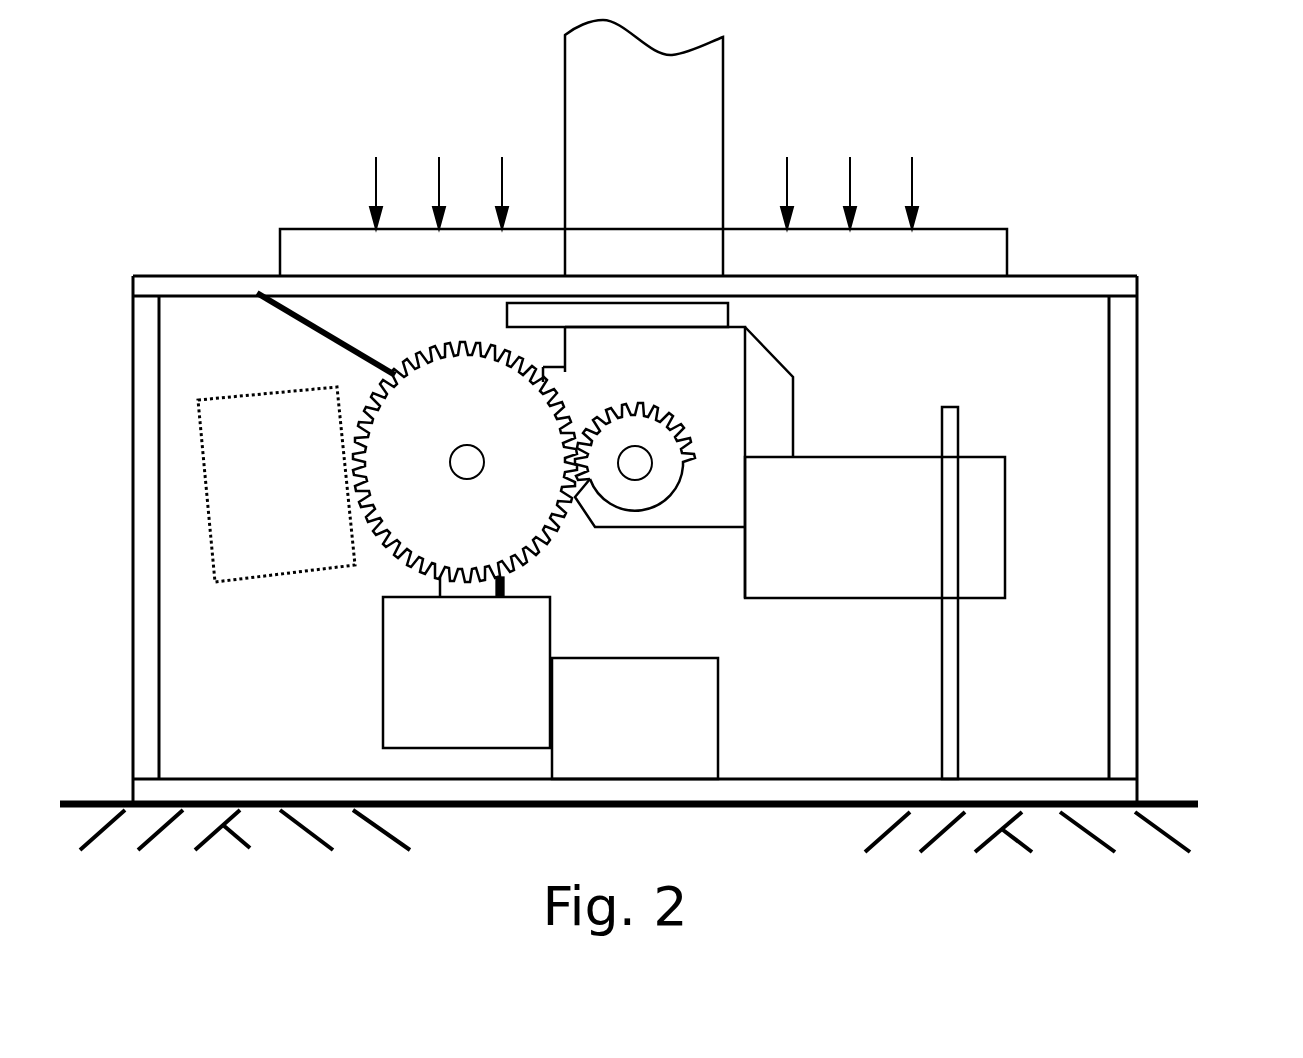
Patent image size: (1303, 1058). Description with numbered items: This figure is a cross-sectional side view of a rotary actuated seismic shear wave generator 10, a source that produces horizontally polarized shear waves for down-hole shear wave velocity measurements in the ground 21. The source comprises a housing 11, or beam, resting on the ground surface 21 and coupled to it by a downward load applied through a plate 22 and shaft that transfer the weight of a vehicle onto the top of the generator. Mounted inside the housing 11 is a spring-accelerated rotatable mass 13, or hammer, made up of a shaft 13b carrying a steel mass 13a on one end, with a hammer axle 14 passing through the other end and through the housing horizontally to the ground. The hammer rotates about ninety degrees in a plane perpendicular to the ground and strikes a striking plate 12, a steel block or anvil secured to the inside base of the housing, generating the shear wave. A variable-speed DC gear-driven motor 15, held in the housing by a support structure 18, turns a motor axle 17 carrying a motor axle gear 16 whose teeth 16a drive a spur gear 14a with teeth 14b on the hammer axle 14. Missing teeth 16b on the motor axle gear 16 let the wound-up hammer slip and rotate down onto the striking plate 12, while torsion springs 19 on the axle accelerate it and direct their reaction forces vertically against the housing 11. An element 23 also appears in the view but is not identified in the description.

The rotary actuated seismic shear wave generator 10 is at (1227, 318).
The housing 11 is at (1138, 506).
The striking plate 12 is at (718, 696).
The spring-accelerated rotatable mass 13 is at (277, 578).
The steel mass 13a is at (383, 690).
The shaft 13b is at (437, 590).
The hammer axle 14 is at (470, 465).
The spur gear 14a is at (523, 512).
The teeth 14b is at (437, 352).
The variable-speed DC gear-driven motor 15 is at (649, 588).
The motor axle gear 16 is at (655, 492).
The teeth 16a is at (655, 402).
The missing teeth 16b is at (680, 483).
The motor axle 17 is at (634, 472).
The support structure 18 is at (1001, 633).
The torsion springs 19 is at (298, 321).
The ground surface 21 is at (307, 836).
The plate 22 is at (968, 228).
The column 23 is at (723, 112).